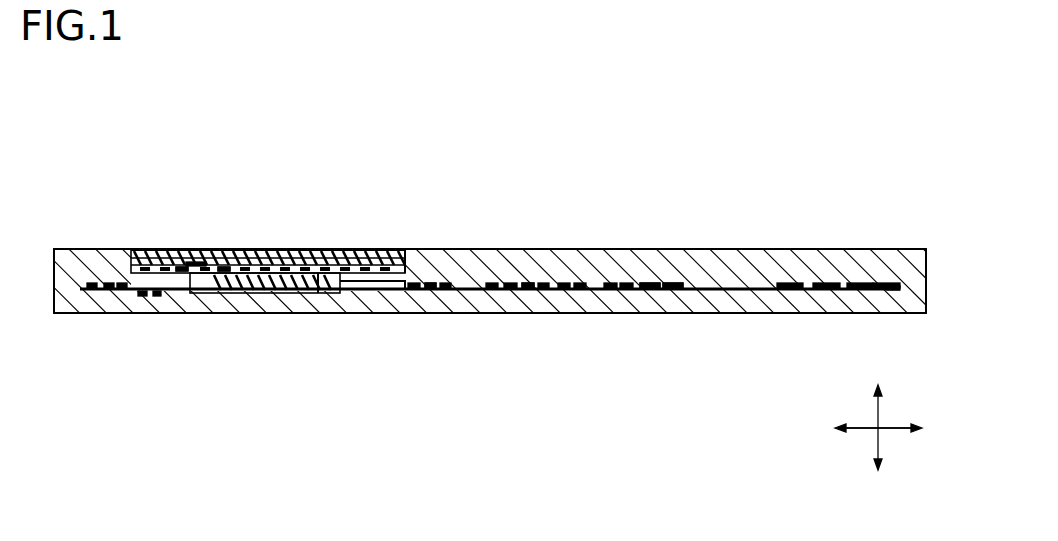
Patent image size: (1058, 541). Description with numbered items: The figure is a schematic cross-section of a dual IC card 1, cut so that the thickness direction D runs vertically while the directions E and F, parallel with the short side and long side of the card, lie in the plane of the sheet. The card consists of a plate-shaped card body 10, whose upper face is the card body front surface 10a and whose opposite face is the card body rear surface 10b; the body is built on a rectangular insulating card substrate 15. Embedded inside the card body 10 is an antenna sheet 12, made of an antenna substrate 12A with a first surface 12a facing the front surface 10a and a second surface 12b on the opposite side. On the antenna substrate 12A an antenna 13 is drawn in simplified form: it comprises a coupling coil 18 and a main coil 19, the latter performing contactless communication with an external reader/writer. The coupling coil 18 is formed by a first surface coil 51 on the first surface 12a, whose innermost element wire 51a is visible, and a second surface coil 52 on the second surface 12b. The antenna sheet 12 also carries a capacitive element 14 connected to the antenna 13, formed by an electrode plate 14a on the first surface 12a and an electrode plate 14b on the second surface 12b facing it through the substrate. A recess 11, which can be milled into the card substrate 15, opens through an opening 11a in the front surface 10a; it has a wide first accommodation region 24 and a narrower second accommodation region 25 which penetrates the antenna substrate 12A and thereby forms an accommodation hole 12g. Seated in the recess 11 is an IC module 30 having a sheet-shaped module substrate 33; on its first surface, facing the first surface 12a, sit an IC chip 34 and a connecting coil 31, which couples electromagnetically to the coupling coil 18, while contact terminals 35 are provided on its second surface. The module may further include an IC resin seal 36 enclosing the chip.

The dual IC card 1 is at (128, 158).
The card body 10 is at (764, 248).
The card body front surface 10a is at (558, 248).
The card body rear surface 10b is at (628, 314).
The recess 11 is at (255, 158).
The opening 11a is at (288, 248).
The antenna sheet 12 is at (897, 281).
The first surface 12a is at (880, 270).
The second surface 12b is at (850, 298).
The antenna substrate 12A is at (756, 298).
The accommodation hole 12g is at (336, 292).
The antenna 13 is at (455, 393).
The capacitive element 14 is at (728, 158).
The electrode plate 14a is at (653, 282).
The electrode plate 14b is at (680, 284).
The card substrate 15 is at (907, 298).
The coupling coil 18 is at (430, 291).
The main coil 19 is at (535, 293).
The first accommodation region 24 is at (181, 266).
The second accommodation region 25 is at (223, 267).
The IC module 30 is at (368, 247).
The connecting coil 31 is at (150, 297).
The module substrate 33 is at (415, 249).
The IC chip 34 is at (278, 292).
The contact terminals 35 is at (190, 262).
The IC resin seal 36 is at (318, 313).
The first surface coil 51 is at (103, 282).
The element wire 51a is at (122, 282).
The second surface coil 52 is at (158, 297).
The thickness direction D is at (880, 420).
The short-side direction E is at (890, 436).
The long-side direction F is at (866, 432).